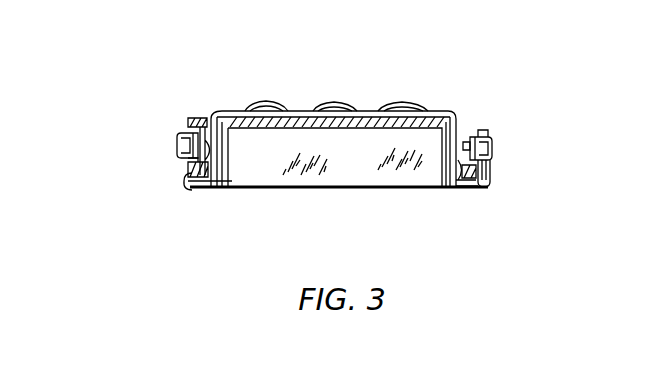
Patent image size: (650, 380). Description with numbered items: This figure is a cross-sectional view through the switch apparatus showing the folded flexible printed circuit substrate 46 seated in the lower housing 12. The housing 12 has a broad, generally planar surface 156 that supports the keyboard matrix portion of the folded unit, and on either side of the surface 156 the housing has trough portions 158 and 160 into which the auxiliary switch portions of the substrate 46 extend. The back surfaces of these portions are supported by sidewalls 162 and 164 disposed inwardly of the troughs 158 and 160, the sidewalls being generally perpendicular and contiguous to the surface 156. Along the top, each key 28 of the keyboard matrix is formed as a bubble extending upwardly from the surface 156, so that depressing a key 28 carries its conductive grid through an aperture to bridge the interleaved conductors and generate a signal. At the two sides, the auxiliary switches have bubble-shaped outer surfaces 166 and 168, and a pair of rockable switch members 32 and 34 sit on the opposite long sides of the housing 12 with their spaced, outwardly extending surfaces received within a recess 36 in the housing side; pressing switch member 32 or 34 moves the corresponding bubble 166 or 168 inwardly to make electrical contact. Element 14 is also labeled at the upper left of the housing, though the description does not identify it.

The lower housing 12 is at (488, 170).
The clamp top piece 14 is at (200, 112).
The bubble key 28 is at (397, 100).
The rockable switch member 32 is at (493, 145).
The rockable switch member 34 is at (178, 143).
The recess 36 is at (488, 175).
The flexible printed circuit substrate 46 is at (445, 102).
The broad surface 156 is at (340, 130).
The trough 158 is at (195, 172).
The trough portion 160 is at (480, 187).
The sidewall 162 is at (228, 147).
The sidewall 164 is at (450, 150).
The bubble 166 is at (480, 128).
The bubble 168 is at (208, 126).